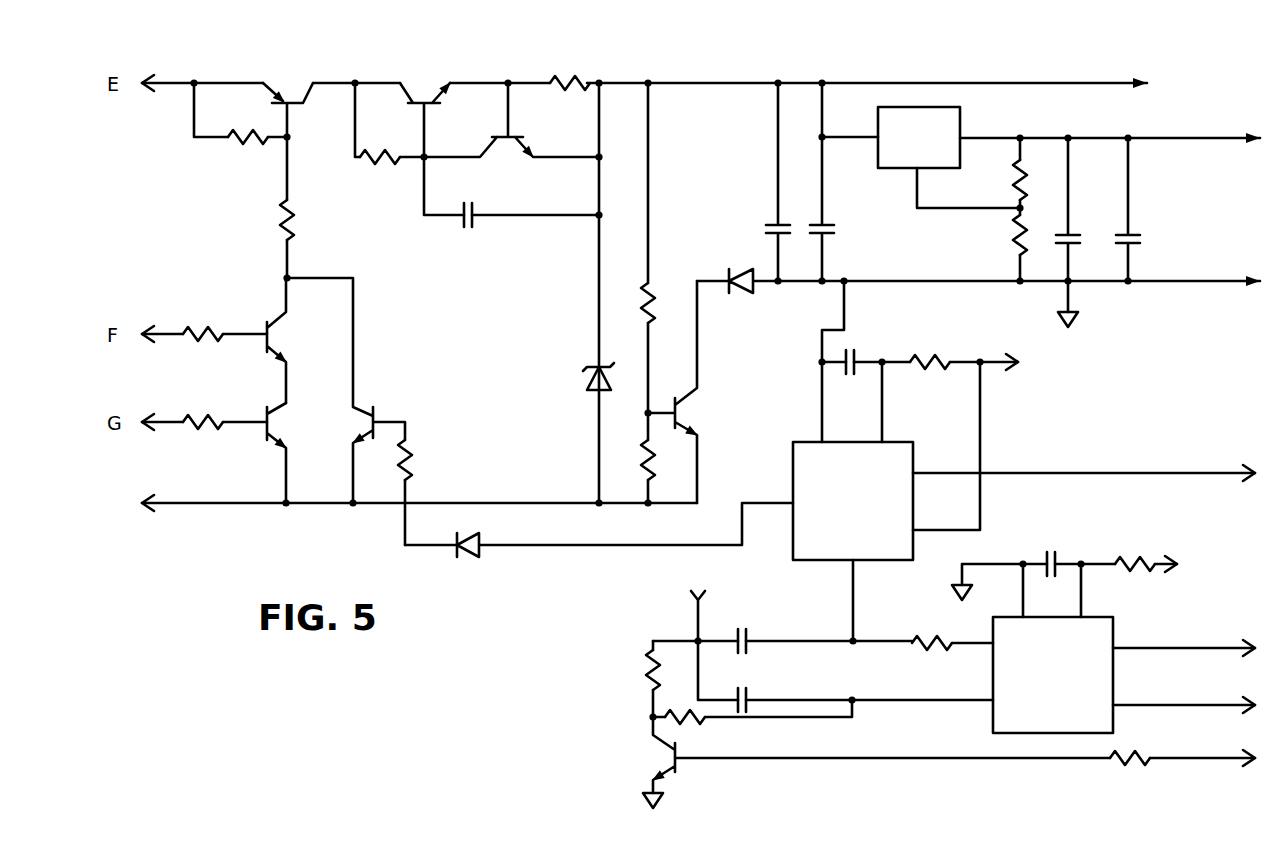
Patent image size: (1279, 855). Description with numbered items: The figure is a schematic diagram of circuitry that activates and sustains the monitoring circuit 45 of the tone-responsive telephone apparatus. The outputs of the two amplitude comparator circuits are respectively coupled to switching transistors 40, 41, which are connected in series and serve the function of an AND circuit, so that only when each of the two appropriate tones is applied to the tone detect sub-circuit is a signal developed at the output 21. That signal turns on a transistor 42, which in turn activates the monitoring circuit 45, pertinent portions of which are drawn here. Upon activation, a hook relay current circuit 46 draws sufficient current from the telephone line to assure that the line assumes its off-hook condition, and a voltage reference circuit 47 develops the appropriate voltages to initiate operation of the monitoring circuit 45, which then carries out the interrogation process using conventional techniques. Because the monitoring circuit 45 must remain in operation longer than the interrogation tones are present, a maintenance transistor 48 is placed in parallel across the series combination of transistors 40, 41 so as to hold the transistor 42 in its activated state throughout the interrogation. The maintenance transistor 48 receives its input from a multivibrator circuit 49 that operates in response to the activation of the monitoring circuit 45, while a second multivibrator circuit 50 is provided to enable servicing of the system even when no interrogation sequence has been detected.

The output 21 is at (288, 259).
The switching transistor 40 is at (288, 358).
The switching transistor 41 is at (290, 432).
The transistor 42 is at (307, 66).
The monitoring circuit 45 is at (902, 71).
The hook relay current circuit 46 is at (546, 52).
The voltage reference circuit 47 is at (902, 164).
The maintenance transistor 48 is at (378, 416).
The multivibrator circuit 49 is at (866, 517).
The second multivibrator circuit 50 is at (1053, 687).